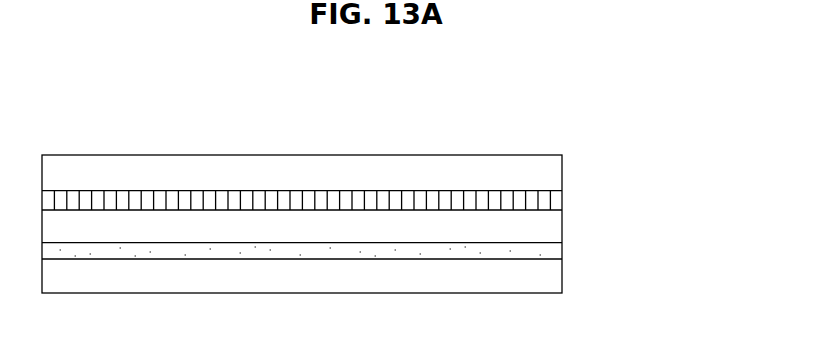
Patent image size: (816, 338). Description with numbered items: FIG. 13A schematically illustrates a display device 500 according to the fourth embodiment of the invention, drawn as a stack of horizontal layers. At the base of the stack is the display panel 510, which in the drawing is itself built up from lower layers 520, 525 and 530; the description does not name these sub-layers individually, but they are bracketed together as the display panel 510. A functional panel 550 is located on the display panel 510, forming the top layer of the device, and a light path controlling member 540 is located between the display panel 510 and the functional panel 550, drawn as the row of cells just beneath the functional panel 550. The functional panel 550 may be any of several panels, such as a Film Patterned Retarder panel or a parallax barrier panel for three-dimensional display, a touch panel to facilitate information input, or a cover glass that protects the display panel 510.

The display device 500 is at (377, 174).
The display panel 510 is at (377, 255).
The base layer 520 is at (546, 277).
The adhesive layer 525 is at (546, 250).
The upper substrate layer 530 is at (546, 226).
The light path controlling member 540 is at (546, 199).
The functional panel 550 is at (546, 171).